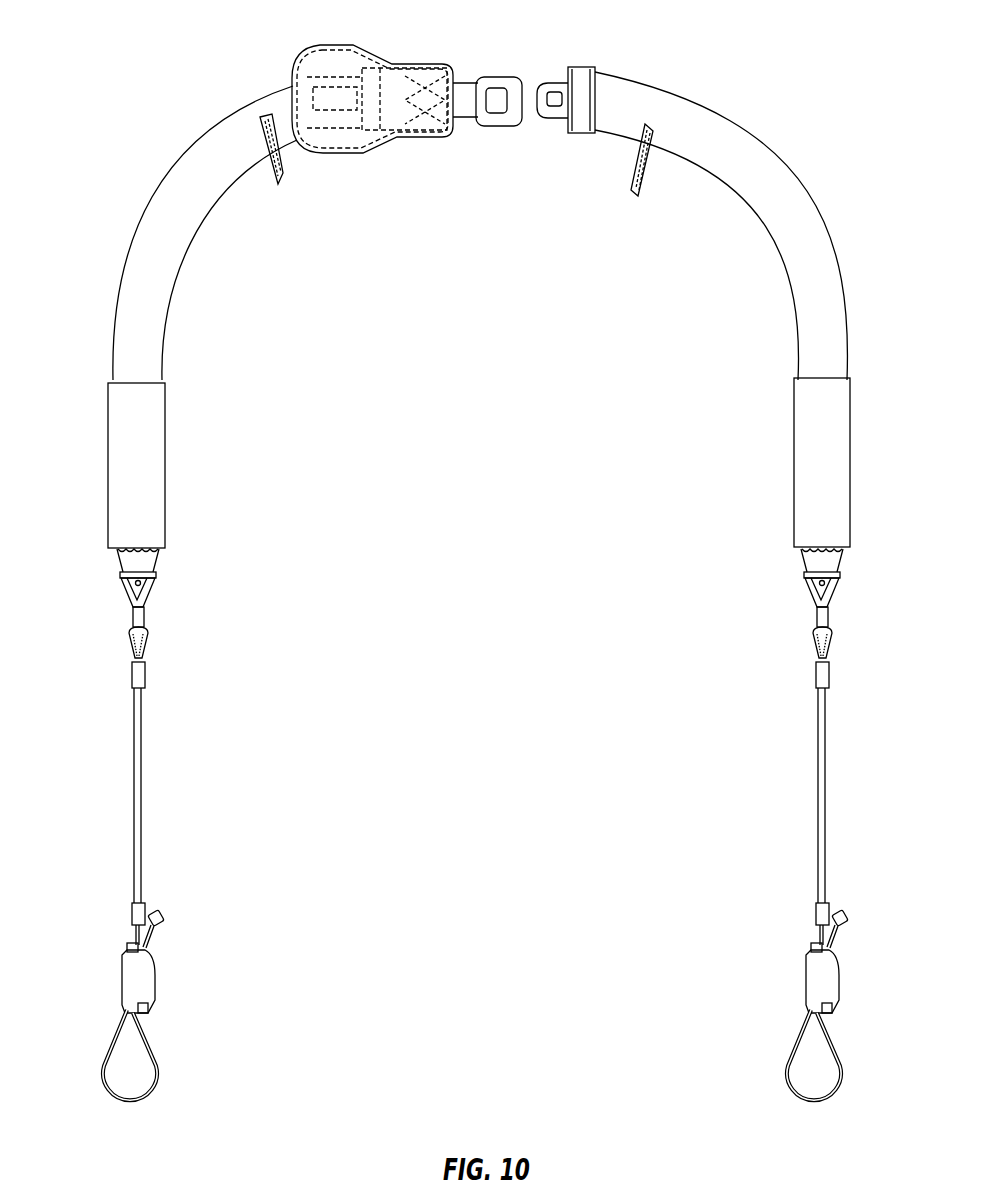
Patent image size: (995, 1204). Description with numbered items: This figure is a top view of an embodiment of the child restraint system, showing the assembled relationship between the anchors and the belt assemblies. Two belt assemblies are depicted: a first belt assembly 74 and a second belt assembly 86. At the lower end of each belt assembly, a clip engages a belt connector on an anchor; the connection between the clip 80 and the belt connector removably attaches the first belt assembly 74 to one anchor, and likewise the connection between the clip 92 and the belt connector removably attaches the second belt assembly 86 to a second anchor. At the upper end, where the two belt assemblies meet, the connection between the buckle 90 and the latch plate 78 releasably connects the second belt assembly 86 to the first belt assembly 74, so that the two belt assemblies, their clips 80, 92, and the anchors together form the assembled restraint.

The first belt assembly 74 is at (757, 120).
The latch plate 78 is at (553, 80).
The clip 80 is at (813, 586).
The second belt assembly 86 is at (170, 152).
The buckle 90 is at (500, 74).
The clip 92 is at (152, 588).